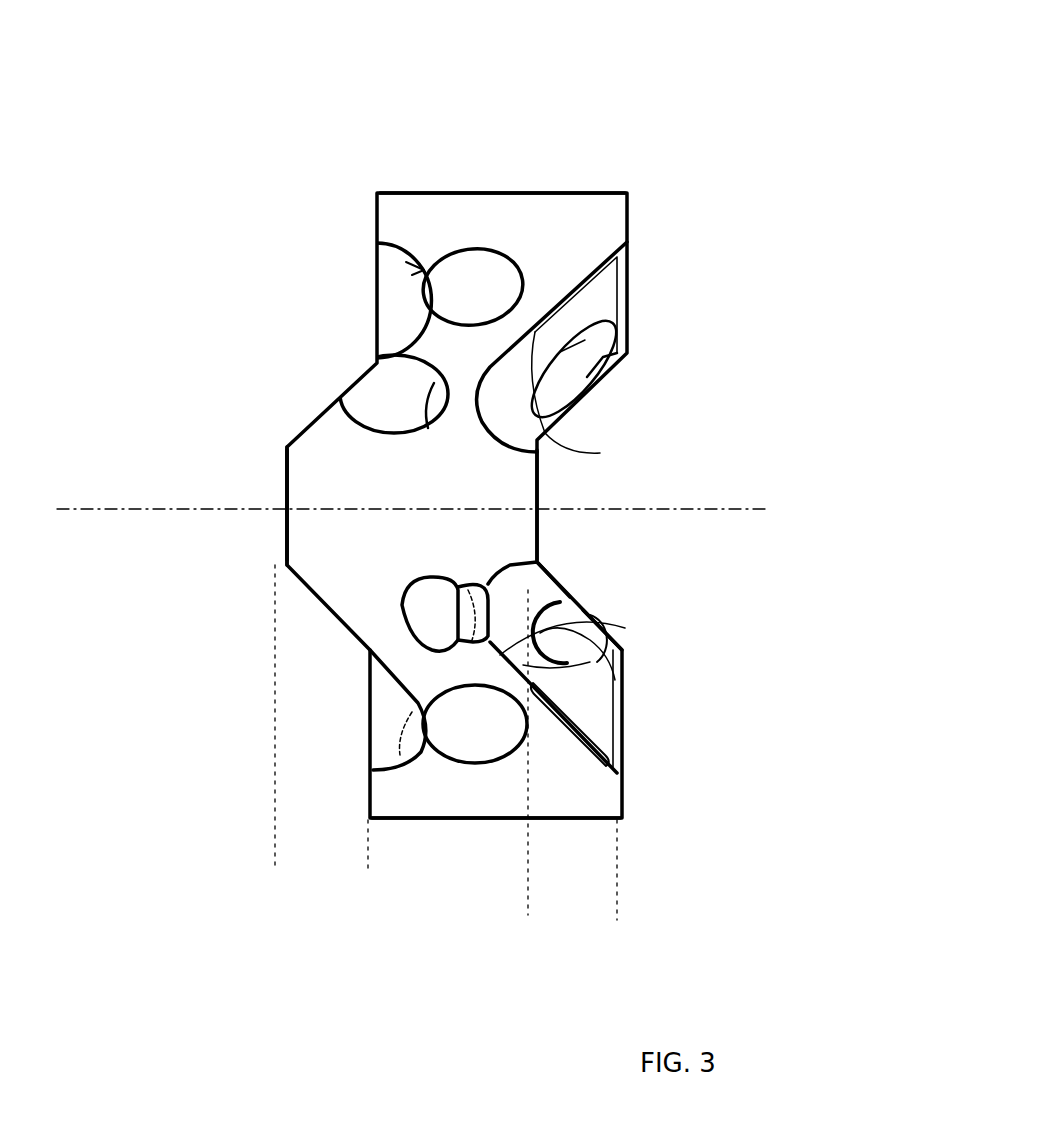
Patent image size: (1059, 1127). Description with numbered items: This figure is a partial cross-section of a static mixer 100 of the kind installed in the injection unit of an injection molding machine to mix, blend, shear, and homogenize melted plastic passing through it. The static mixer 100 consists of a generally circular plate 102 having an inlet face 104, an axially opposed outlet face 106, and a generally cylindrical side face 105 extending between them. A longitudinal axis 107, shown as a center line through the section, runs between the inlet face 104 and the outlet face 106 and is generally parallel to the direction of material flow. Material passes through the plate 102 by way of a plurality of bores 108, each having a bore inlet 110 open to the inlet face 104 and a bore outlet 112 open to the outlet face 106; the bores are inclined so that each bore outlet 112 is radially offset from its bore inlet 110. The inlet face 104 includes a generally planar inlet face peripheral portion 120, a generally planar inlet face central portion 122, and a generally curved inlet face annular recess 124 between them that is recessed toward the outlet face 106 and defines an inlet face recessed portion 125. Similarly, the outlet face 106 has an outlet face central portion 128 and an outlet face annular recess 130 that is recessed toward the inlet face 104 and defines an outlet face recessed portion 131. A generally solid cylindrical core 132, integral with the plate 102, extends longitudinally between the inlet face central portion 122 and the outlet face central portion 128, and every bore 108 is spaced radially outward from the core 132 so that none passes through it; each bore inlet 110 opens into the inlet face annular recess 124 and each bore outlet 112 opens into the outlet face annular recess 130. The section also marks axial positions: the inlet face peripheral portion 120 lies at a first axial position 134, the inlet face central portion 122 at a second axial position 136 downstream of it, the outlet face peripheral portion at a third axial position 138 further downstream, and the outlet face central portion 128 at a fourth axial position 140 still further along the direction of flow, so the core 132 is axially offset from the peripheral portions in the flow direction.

The static mixer 100 is at (715, 146).
The plate 102 is at (523, 213).
The inlet face 104 is at (636, 228).
The side face 105 is at (425, 193).
The outlet face 106 is at (370, 284).
The longitudinal axis 107 is at (108, 512).
The bore 108 is at (447, 713).
The bore inlet 110 is at (579, 388).
The bore outlet 112 is at (400, 284).
The inlet face peripheral portion 120 is at (623, 797).
The inlet face central portion 122 is at (545, 542).
The inlet face annular recess 124 is at (620, 672).
The inlet face recessed portion 125 is at (550, 637).
The outlet face central portion 128 is at (285, 525).
The outlet face annular recess 130 is at (455, 302).
The outlet face recessed portion 131 is at (443, 620).
The core 132 is at (450, 522).
The first axial position 134 is at (618, 900).
The second axial position 136 is at (555, 880).
The third axial position 138 is at (368, 895).
The fourth axial position 140 is at (270, 888).